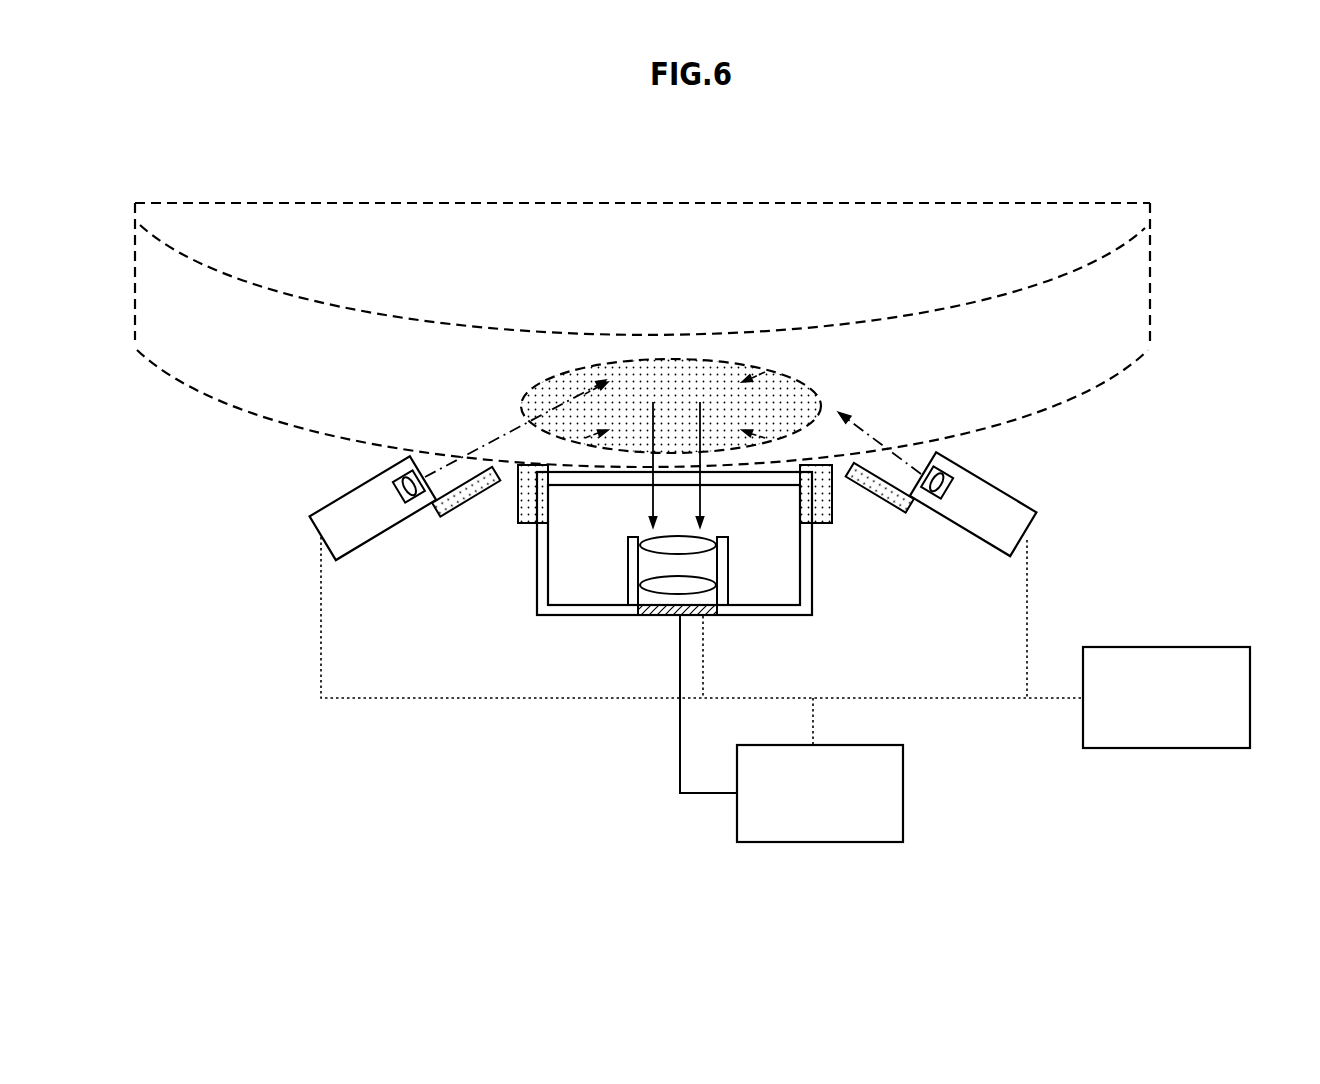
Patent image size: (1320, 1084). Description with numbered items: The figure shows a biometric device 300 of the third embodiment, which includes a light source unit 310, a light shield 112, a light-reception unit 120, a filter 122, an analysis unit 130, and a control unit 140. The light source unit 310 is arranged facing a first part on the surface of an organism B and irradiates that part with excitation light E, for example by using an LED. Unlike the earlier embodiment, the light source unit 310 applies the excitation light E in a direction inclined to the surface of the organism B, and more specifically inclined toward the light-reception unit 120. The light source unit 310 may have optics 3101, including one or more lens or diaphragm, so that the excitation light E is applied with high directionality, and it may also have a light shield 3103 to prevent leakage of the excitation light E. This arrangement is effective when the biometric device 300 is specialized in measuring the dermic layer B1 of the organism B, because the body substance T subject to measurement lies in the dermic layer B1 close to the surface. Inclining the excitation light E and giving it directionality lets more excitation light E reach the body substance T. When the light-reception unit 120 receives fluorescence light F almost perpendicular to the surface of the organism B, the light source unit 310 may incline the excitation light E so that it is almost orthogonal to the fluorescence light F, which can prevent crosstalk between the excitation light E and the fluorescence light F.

The organism B is at (1005, 206).
The dermic layer B1 is at (1003, 405).
The body substance T is at (745, 362).
The excitation light E is at (482, 440).
The fluorescence light F is at (701, 497).
The light shield 112 is at (528, 528).
The light-reception unit 120 is at (633, 645).
The filter 122 is at (601, 484).
The analysis unit 130 is at (810, 845).
The control unit 140 is at (1175, 750).
The biometric device 300 is at (541, 806).
The light source unit 310 is at (294, 544).
The optics 3101 is at (392, 474).
The light shield 3103 is at (449, 515).